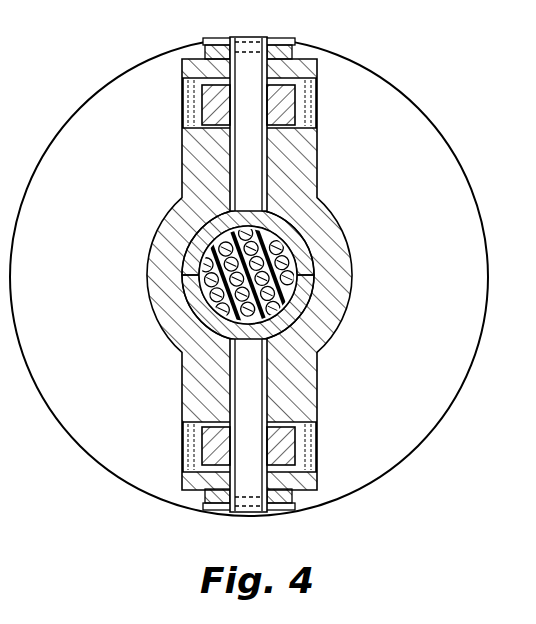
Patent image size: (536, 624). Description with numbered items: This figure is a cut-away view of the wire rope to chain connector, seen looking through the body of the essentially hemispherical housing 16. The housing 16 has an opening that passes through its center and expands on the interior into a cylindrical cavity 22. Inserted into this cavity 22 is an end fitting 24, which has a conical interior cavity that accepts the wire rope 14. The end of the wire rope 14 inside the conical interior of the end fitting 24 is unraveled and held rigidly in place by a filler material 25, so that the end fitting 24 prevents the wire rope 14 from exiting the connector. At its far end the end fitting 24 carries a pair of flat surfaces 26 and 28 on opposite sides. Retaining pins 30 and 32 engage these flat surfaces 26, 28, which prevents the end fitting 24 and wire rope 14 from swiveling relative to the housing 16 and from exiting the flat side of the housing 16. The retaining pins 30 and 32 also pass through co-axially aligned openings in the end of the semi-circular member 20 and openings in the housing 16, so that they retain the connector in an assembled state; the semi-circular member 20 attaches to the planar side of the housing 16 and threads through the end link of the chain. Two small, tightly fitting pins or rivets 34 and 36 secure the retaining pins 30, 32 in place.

The hemispherical housing 16 is at (477, 194).
The cylindrical cavity 22 is at (273, 207).
The flat surface 26 is at (197, 230).
The flat surface 28 is at (213, 328).
The filler material 25 is at (293, 288).
The end fitting 24 is at (305, 271).
The wire rope 14 is at (291, 232).
The pin or rivet 34 is at (296, 50).
The pin or rivet 36 is at (287, 498).
The retaining pin 30 is at (251, 37).
The retaining pin 32 is at (250, 513).
The semi-circular member 20 is at (287, 110).